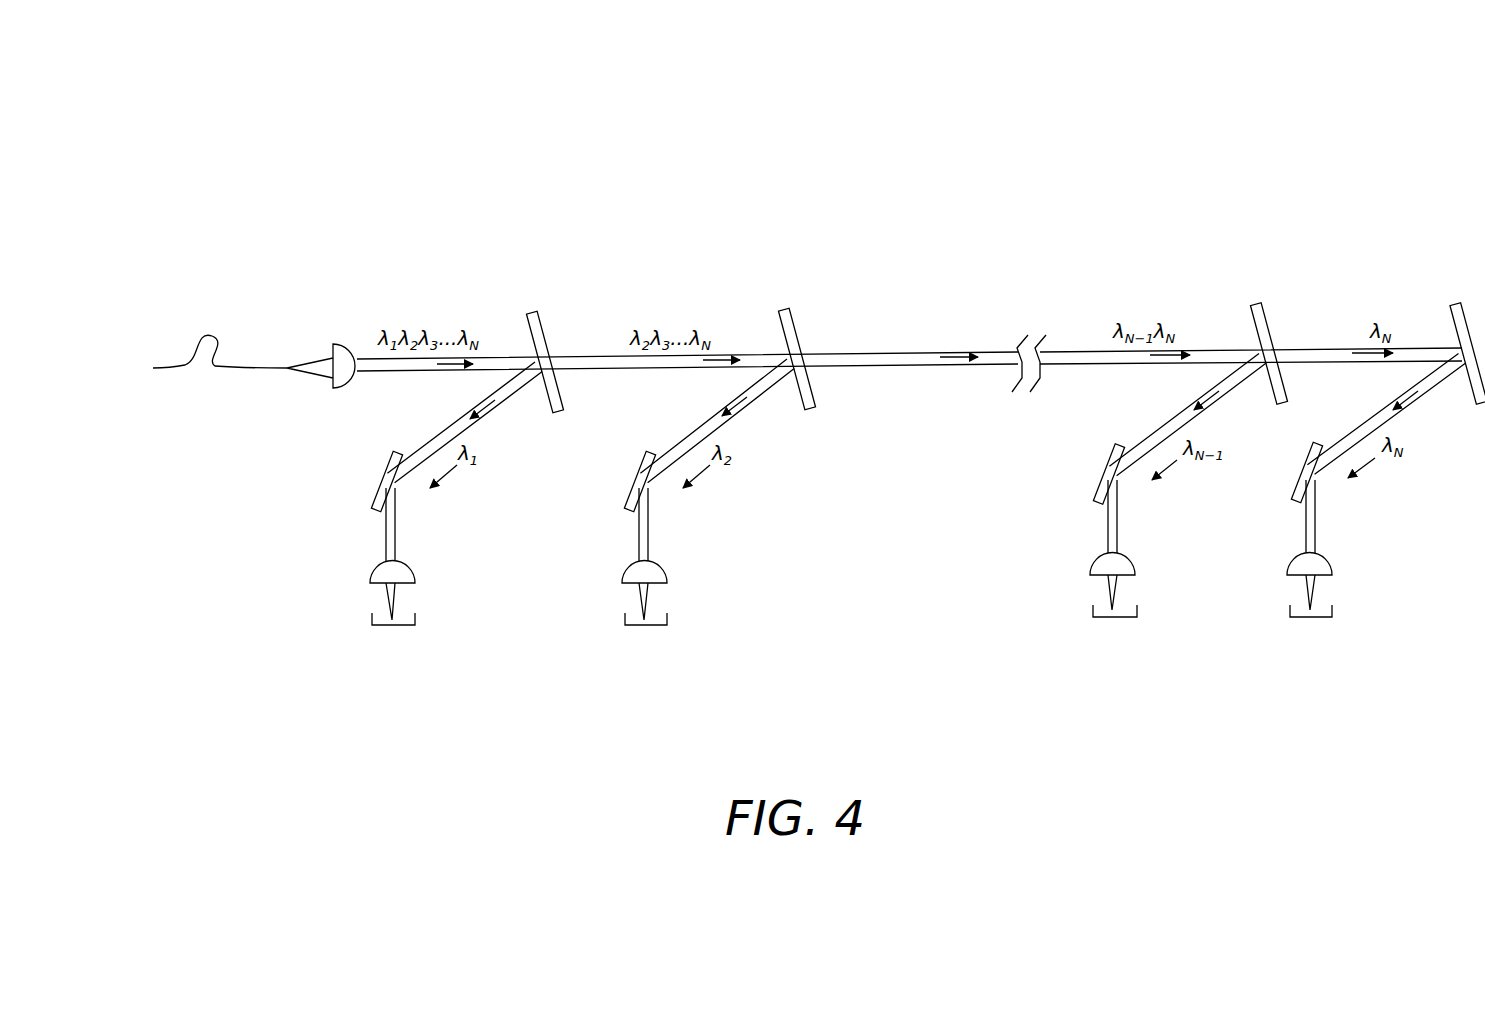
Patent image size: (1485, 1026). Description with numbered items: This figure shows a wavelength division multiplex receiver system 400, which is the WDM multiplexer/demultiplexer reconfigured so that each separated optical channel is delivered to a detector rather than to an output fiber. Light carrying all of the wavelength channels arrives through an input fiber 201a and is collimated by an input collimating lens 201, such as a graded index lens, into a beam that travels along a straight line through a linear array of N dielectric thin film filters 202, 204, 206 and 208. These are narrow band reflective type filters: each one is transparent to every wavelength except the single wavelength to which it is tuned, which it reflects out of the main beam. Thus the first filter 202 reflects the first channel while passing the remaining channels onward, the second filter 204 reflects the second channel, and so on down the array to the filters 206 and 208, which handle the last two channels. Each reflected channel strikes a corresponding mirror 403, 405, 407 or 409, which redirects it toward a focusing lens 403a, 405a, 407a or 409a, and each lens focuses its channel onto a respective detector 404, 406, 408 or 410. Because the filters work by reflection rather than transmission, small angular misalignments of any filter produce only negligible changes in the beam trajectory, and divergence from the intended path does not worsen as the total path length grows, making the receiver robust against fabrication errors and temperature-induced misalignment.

The WDM receiver system 400 is at (543, 107).
The input fiber 201a is at (205, 333).
The input collimating lens 201 is at (330, 344).
The dielectric thin film filter 202 is at (532, 313).
The dielectric thin film filter 204 is at (783, 311).
The dielectric thin film filter 206 is at (1255, 304).
The dielectric thin film filter 208 is at (1455, 304).
The mirror 403 is at (386, 482).
The focusing lens 403a is at (369, 578).
The detector 404 is at (372, 620).
The mirror 405 is at (637, 482).
The focusing lens 405a is at (621, 578).
The detector 406 is at (625, 620).
The mirror 407 is at (1106, 475).
The focusing lens 407a is at (1090, 570).
The detector 408 is at (1093, 612).
The mirror 409 is at (1305, 473).
The focusing lens 409a is at (1287, 570).
The detector 410 is at (1290, 612).